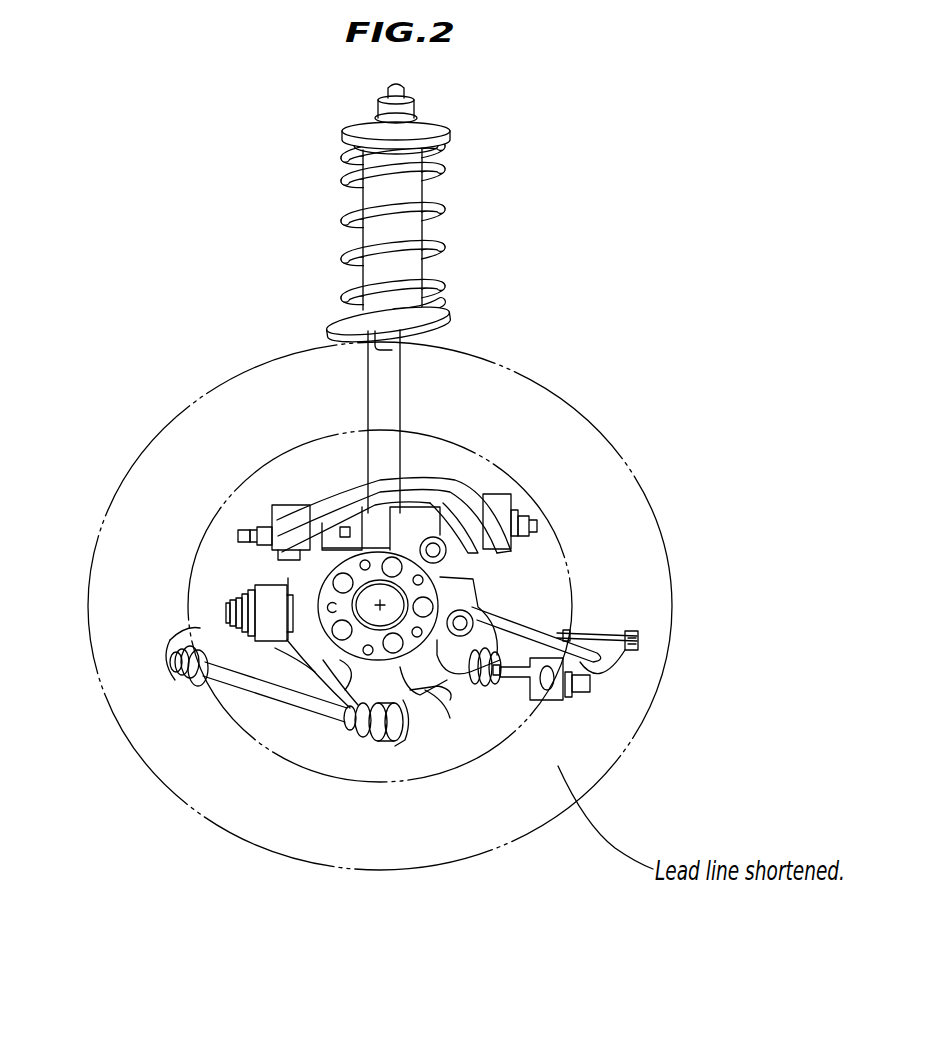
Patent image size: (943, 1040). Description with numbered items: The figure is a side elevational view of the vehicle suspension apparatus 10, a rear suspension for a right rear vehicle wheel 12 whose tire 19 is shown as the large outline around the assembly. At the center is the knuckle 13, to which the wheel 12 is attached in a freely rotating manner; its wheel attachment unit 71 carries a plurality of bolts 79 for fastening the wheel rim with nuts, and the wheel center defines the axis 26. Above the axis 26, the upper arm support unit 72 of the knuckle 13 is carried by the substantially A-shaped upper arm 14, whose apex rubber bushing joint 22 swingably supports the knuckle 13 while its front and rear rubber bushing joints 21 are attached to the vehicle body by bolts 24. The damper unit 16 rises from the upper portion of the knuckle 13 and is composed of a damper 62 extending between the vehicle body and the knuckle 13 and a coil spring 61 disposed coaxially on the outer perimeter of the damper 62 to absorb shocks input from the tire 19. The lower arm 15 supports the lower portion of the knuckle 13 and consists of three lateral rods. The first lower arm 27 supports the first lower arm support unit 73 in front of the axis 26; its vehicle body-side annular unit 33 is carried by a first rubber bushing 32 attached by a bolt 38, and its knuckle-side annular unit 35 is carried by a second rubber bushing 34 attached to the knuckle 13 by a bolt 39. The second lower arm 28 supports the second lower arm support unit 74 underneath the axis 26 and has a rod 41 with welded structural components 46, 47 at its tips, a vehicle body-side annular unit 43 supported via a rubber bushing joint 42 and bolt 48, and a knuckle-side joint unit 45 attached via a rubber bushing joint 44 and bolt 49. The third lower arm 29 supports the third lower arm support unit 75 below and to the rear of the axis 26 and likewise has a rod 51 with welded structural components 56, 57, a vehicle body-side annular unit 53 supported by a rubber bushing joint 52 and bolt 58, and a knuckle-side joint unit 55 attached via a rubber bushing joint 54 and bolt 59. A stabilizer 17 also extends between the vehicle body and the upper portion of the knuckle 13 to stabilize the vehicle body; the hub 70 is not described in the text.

The vehicle suspension apparatus 10 is at (156, 104).
The vehicle wheel 12 is at (612, 418).
The knuckle 13 is at (413, 733).
The upper arm 14 is at (555, 396).
The lower arm 15 is at (295, 757).
The damper unit 16 is at (446, 215).
The stabilizer 17 is at (566, 649).
The tire 19 is at (617, 441).
The rubber bushing joint 21 is at (262, 527).
The rubber bushing joint 22 is at (443, 477).
The bolt 24 is at (250, 532).
The axis 26 is at (406, 498).
The first lower arm 27 is at (205, 583).
The second lower arm 28 is at (261, 738).
The third lower arm 29 is at (566, 688).
The first rubber bushing 32 is at (262, 642).
The vehicle body-side annular unit 33 is at (281, 642).
The second rubber bushing 34 is at (250, 592).
The knuckle-side annular unit 35 is at (257, 590).
The bolt 38 is at (237, 612).
The bolt 39 is at (247, 598).
The rod 41 is at (267, 698).
The rubber bushing joint 42 is at (188, 682).
The vehicle body-side annular unit 43 is at (188, 638).
The rubber bushing joint 44 is at (377, 740).
The knuckle-side joint unit 45 is at (349, 738).
The welded structural component 46 is at (212, 700).
The welded structural component 47 is at (333, 720).
The bolt 48 is at (181, 668).
The bolt 49 is at (350, 735).
The rod 51 is at (521, 685).
The rubber bushing joint 52 is at (596, 709).
The vehicle body-side annular unit 53 is at (568, 703).
The rubber bushing joint 54 is at (467, 690).
The knuckle-side joint unit 55 is at (483, 614).
The welded structural component 56 is at (549, 700).
The welded structural component 57 is at (556, 624).
The bolt 58 is at (588, 688).
The bolt 59 is at (481, 690).
The coil spring 61 is at (447, 199).
The damper 62 is at (447, 252).
The hub 70 is at (378, 606).
The wheel attachment unit 71 is at (447, 551).
The upper arm support unit 72 is at (481, 487).
The first lower arm support unit 73 is at (279, 545).
The second lower arm support unit 74 is at (381, 743).
The third lower arm support unit 75 is at (411, 716).
The bolt 79 is at (345, 664).